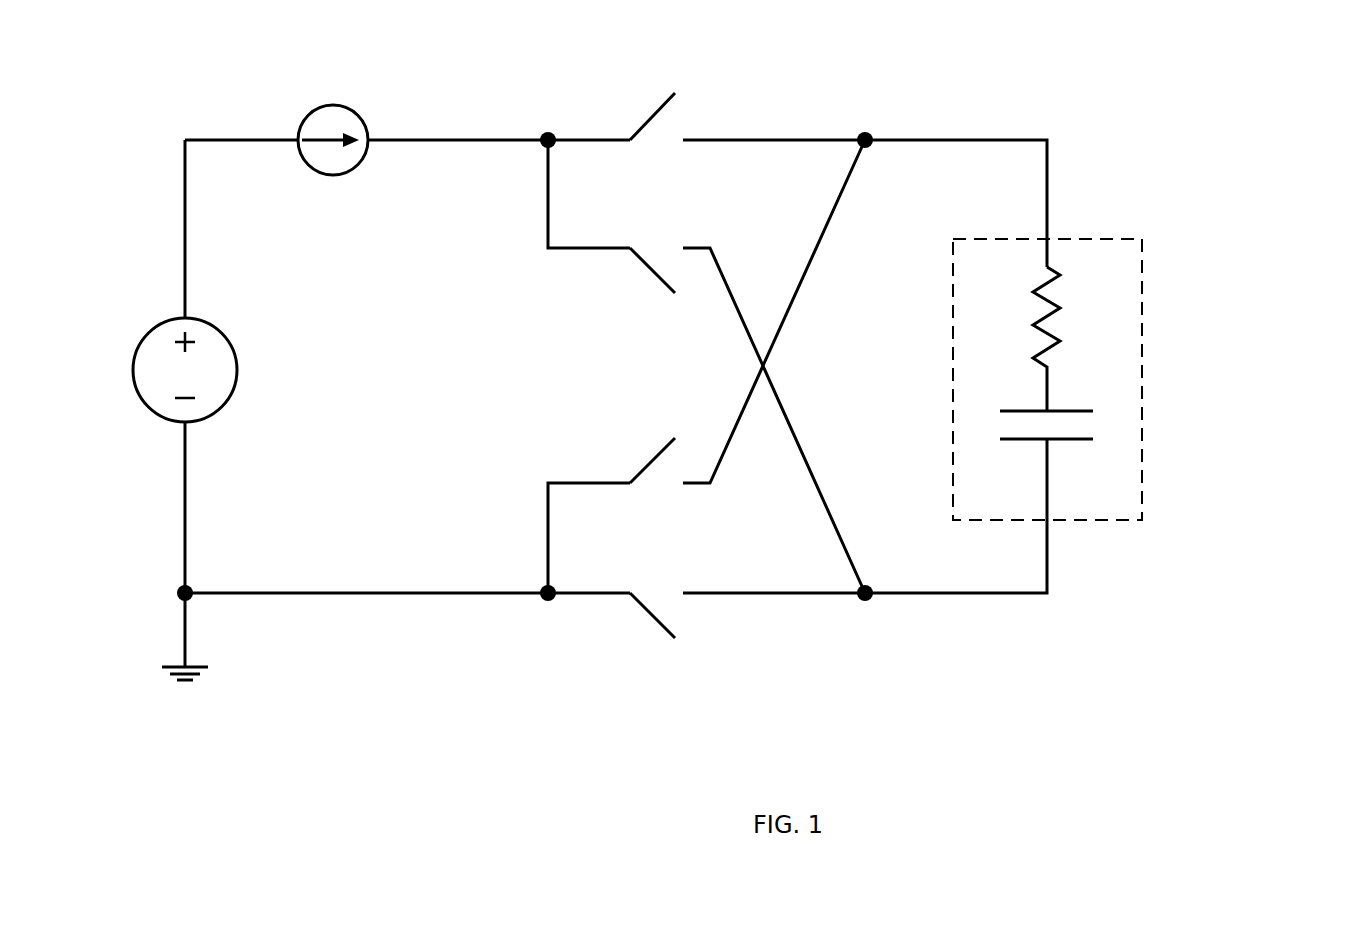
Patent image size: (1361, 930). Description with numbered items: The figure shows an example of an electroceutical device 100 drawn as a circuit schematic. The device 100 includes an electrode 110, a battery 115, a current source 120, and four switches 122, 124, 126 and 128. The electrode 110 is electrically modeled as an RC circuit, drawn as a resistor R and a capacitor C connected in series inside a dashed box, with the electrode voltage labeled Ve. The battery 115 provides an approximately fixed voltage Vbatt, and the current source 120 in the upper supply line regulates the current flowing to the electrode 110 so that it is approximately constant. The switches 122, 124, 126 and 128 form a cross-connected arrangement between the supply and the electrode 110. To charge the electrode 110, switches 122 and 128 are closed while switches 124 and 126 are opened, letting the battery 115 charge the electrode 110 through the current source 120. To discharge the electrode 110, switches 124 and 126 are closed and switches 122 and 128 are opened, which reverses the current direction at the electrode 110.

The electroceutical device 100 is at (1350, 77).
The electrode 110 is at (1087, 238).
The battery 115 is at (212, 322).
The current source 120 is at (345, 107).
The switch 122 is at (648, 103).
The switch 124 is at (645, 278).
The switch 126 is at (651, 439).
The switch 128 is at (635, 612).